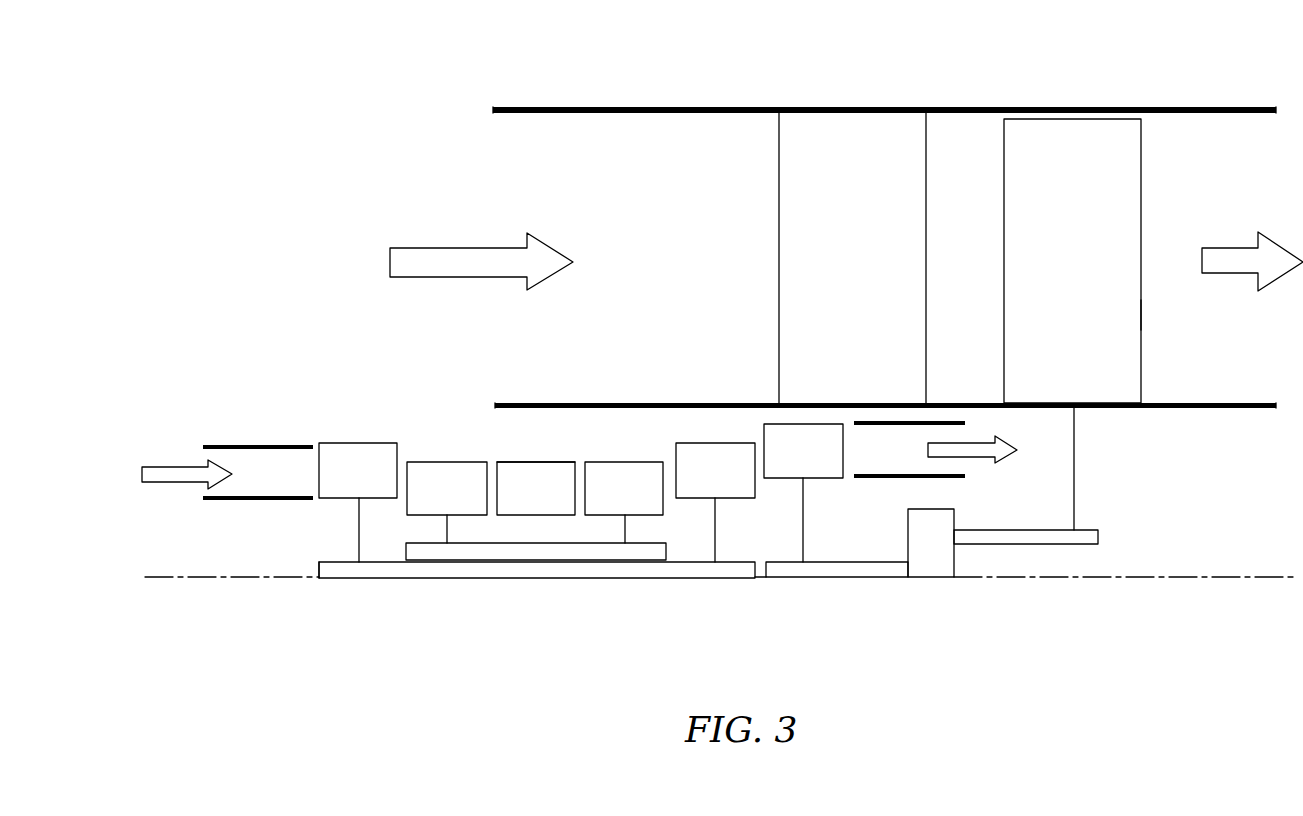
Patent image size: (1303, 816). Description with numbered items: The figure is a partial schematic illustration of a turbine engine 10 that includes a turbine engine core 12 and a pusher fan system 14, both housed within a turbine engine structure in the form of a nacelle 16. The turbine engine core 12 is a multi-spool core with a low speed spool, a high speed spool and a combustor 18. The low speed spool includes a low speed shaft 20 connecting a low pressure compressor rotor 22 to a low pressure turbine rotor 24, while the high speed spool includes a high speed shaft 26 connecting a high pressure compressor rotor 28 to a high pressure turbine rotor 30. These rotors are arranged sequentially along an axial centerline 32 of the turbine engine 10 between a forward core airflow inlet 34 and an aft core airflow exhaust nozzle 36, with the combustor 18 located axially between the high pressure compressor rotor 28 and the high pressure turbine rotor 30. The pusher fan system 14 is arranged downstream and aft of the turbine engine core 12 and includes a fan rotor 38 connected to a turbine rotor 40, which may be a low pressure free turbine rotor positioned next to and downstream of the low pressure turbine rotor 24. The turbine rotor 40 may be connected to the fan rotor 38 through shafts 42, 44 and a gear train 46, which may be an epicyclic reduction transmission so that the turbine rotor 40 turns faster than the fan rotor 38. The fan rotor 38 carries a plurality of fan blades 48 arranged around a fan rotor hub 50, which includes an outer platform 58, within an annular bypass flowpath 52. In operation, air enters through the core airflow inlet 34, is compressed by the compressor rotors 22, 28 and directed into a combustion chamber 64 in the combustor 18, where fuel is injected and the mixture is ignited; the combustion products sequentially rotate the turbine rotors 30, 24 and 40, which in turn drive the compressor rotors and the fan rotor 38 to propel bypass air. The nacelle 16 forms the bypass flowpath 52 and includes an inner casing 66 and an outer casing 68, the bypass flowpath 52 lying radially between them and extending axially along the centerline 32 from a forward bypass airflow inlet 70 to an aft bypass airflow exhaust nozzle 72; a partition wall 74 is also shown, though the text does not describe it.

The turbine engine 10 is at (366, 97).
The turbine engine core 12 is at (345, 589).
The pusher fan system 14 is at (1109, 467).
The nacelle 16 is at (626, 112).
The combustor 18 is at (548, 462).
The low speed shaft 20 is at (400, 578).
The low pressure compressor rotor 22 is at (357, 443).
The low pressure turbine rotor 24 is at (706, 443).
The high speed shaft 26 is at (490, 560).
The high pressure compressor rotor 28 is at (447, 462).
The high pressure turbine rotor 30 is at (610, 462).
The axial centerline 32 is at (1233, 578).
The core airflow inlet 34 is at (203, 498).
The core airflow exhaust nozzle 36 is at (965, 476).
The fan rotor 38 is at (1142, 314).
The turbine rotor 40 is at (822, 462).
The shaft 42 is at (835, 570).
The shaft 44 is at (1013, 544).
The gear train 46 is at (928, 563).
The fan blades 48 is at (1141, 170).
The fan rotor hub 50 is at (1222, 407).
The bypass flowpath 52 is at (617, 281).
The outer platform 58 is at (1268, 403).
The combustion chamber 64 is at (521, 502).
The inner casing 66 is at (517, 403).
The outer casing 68 is at (573, 113).
The bypass airflow inlet 70 is at (491, 113).
The bypass airflow exhaust nozzle 72 is at (1275, 113).
The partition wall 74 is at (779, 205).